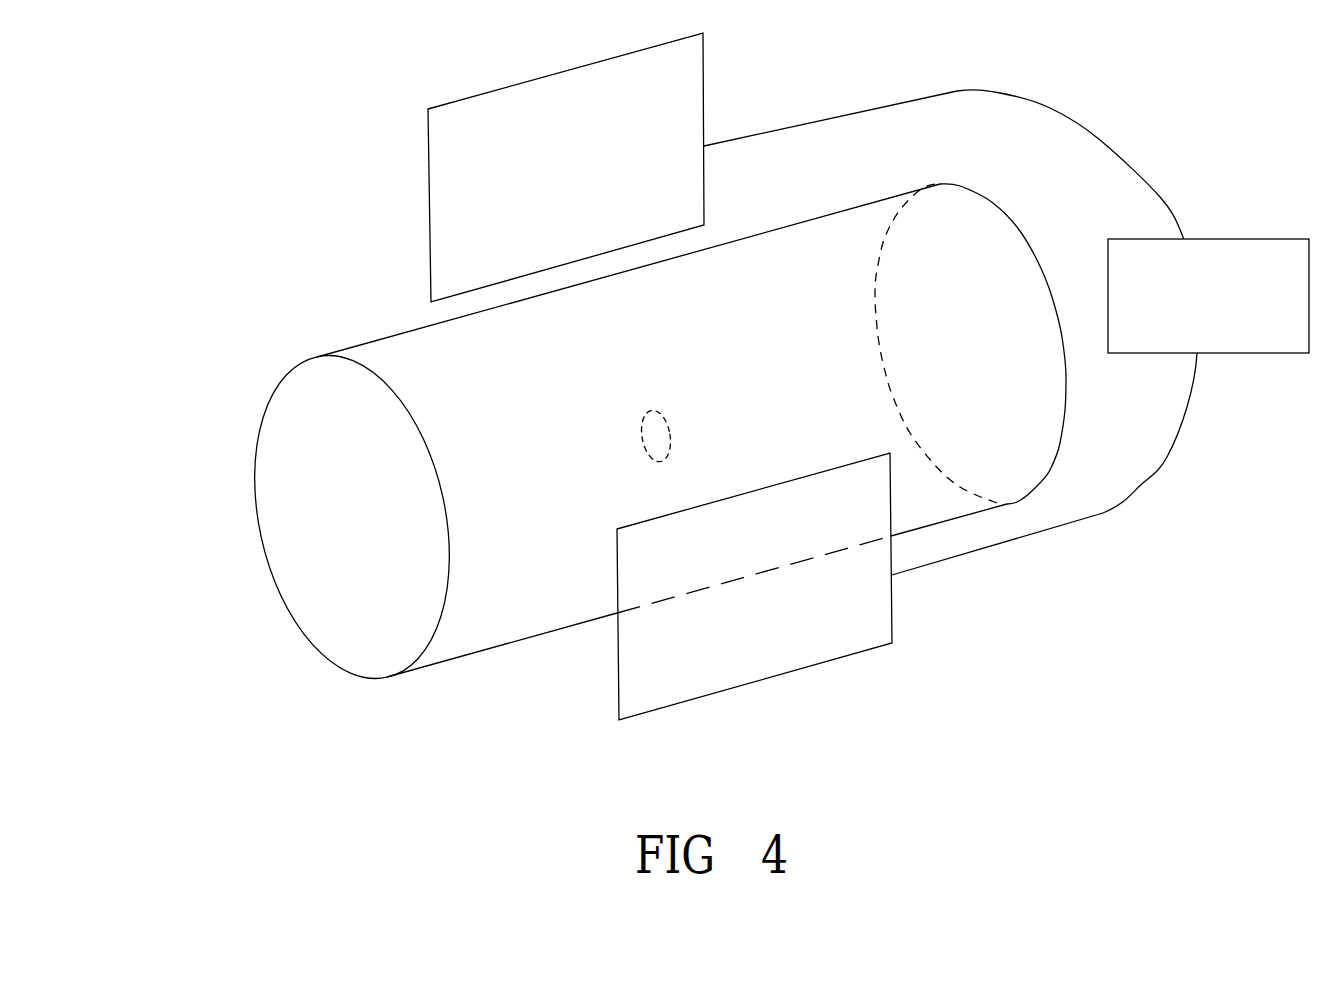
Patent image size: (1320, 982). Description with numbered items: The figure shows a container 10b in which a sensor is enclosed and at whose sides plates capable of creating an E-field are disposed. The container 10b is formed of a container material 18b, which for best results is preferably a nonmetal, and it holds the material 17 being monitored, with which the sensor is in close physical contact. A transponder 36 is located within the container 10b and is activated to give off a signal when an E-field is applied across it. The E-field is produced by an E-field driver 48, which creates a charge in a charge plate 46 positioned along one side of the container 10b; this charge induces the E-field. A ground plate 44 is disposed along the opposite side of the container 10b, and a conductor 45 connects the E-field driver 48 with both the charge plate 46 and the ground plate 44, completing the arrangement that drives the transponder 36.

The container 10b is at (370, 348).
The container material 18b is at (278, 566).
The material 17 is at (505, 615).
The transponder 36 is at (667, 423).
The ground plate 44 is at (886, 627).
The charge plate 46 is at (458, 228).
The conductor 45 is at (1132, 162).
The E-field driver 48 is at (1277, 257).